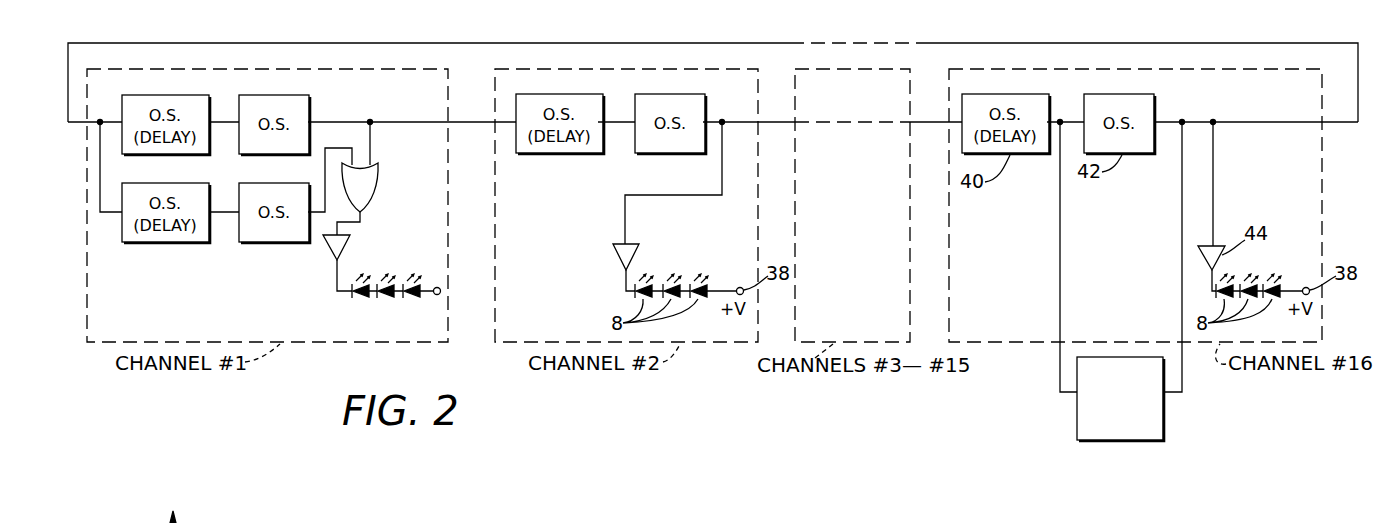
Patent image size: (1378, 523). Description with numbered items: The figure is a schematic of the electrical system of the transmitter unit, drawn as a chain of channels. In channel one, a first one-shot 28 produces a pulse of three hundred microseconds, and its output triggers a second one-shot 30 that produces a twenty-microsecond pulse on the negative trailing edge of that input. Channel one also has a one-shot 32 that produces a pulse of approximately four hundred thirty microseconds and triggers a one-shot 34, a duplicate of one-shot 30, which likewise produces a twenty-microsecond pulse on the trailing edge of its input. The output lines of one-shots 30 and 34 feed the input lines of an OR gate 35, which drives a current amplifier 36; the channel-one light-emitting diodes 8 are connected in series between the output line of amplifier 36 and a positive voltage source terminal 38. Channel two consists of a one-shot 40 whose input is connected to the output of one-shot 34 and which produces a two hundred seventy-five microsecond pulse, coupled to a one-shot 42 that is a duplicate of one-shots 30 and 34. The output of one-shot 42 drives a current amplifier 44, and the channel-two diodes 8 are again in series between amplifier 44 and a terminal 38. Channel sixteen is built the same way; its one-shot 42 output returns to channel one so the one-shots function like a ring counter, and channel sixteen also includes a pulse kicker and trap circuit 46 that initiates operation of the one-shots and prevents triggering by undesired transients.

The light emitting diode 8 is at (412, 299).
The first one-shot 28 is at (180, 242).
The second one-shot 30 is at (290, 242).
The one-shot 32 is at (142, 95).
The one-shot 34 is at (300, 95).
The OR gate 35 is at (378, 180).
The current amplifier 36 is at (348, 247).
The positive voltage source terminal 38 is at (441, 290).
The one-shot 40 is at (565, 155).
The one-shot 42 is at (665, 155).
The current amplifier 44 is at (613, 258).
The pulse kicker and trap circuit 46 is at (1077, 418).